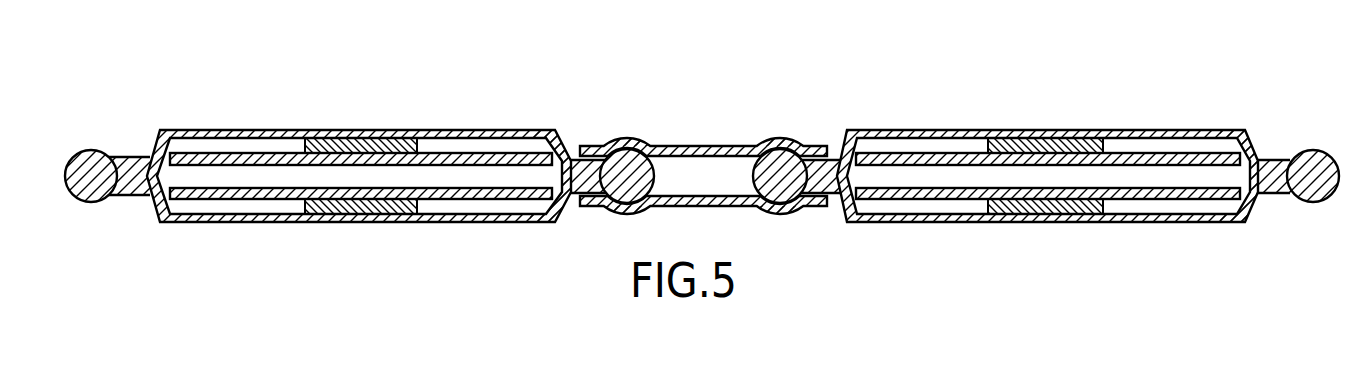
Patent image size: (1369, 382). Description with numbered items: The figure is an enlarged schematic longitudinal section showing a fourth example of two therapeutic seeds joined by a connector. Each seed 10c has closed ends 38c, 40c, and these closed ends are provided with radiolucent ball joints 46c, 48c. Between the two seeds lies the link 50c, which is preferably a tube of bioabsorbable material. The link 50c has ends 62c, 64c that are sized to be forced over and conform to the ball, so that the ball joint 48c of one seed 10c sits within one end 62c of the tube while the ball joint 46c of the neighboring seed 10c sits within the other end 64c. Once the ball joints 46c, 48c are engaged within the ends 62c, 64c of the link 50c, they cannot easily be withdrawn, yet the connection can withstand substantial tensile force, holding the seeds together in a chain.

The seed 10c is at (387, 130).
The closed end 38c is at (153, 143).
The closed end 40c is at (562, 138).
The ball joint 46c is at (98, 164).
The ball joint 48c is at (631, 162).
The link 50c is at (713, 147).
The end of the link 62c is at (614, 214).
The end of the link 64c is at (791, 214).